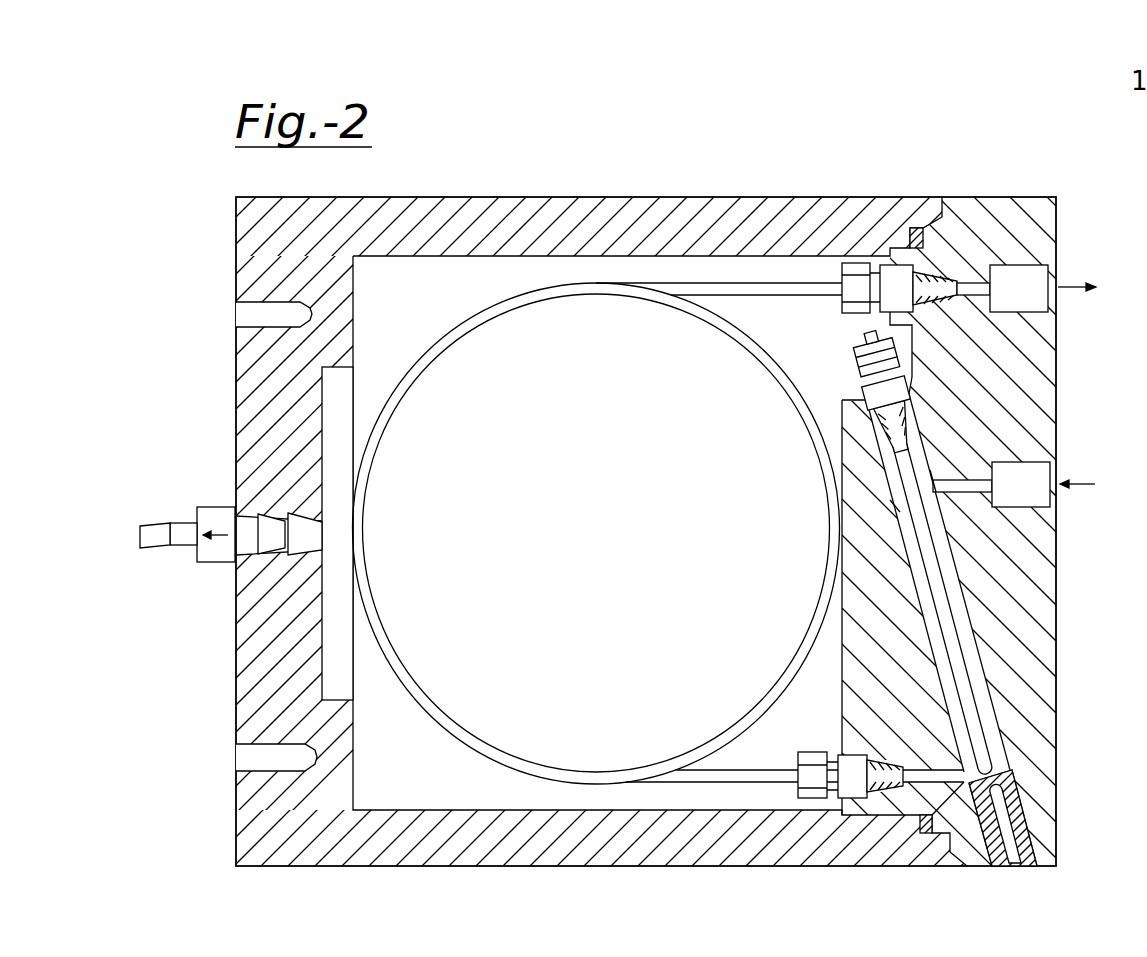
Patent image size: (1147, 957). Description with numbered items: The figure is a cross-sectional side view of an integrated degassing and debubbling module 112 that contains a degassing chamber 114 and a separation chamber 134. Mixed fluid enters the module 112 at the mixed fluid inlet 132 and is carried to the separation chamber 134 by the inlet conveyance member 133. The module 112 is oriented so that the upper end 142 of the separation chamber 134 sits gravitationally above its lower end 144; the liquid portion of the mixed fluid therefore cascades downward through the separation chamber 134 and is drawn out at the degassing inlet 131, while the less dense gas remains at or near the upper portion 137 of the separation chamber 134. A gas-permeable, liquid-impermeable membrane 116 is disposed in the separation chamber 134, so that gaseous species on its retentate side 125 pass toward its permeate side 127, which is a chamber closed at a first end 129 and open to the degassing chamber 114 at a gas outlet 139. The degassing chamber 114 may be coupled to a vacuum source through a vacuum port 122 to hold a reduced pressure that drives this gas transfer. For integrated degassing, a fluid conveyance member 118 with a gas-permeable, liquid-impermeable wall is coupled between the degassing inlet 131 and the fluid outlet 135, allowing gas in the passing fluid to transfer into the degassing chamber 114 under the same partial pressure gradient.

The module 112 is at (814, 189).
The degassing chamber 114 is at (614, 519).
The membrane 116 is at (965, 652).
The fluid conveyance member 118 is at (493, 745).
The vacuum port 122 is at (151, 522).
The retentate side 125 is at (923, 583).
The permeate side 127 is at (950, 625).
The first end 129 is at (1035, 742).
The degassing inlet 131 is at (943, 725).
The mixed fluid inlet 132 is at (1058, 466).
The inlet conveyance member 133 is at (955, 478).
The separation chamber 134 is at (950, 560).
The fluid outlet 135 is at (1052, 267).
The upper portion 137 is at (896, 505).
The gas outlet 139 is at (862, 336).
The upper end 142 is at (886, 500).
The lower end 144 is at (1005, 742).